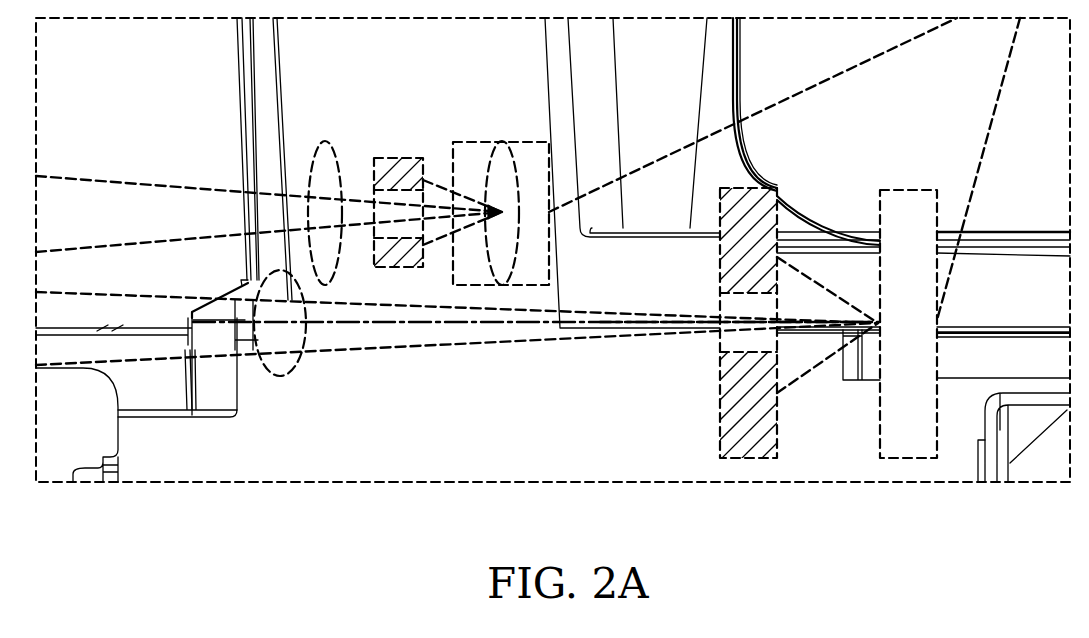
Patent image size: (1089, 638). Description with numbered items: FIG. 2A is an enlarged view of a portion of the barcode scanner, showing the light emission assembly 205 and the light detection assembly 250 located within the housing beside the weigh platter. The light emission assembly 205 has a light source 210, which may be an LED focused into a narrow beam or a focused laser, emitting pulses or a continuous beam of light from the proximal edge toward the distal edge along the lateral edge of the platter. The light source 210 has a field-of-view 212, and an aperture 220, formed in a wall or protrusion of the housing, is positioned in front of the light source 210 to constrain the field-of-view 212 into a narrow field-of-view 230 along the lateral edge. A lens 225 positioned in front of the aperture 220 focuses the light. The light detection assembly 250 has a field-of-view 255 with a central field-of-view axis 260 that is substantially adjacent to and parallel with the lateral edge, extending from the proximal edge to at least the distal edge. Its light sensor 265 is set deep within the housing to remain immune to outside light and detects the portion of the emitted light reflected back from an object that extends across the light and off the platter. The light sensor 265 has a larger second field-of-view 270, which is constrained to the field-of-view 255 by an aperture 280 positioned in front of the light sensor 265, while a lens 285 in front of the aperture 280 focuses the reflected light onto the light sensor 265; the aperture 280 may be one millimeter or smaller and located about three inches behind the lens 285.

The light emission assembly 205 is at (368, 97).
The light source 210 is at (535, 142).
The field-of-view 212 is at (458, 190).
The aperture 220 is at (383, 192).
The lens 225 is at (325, 141).
The narrow field-of-view 230 is at (150, 183).
The light detection assembly 250 is at (830, 506).
The field-of-view 255 is at (393, 347).
The central field-of-view axis 260 is at (490, 325).
The light sensor 265 is at (908, 460).
The second field-of-view 270 is at (792, 387).
The aperture 280 is at (747, 293).
The lens 285 is at (280, 377).